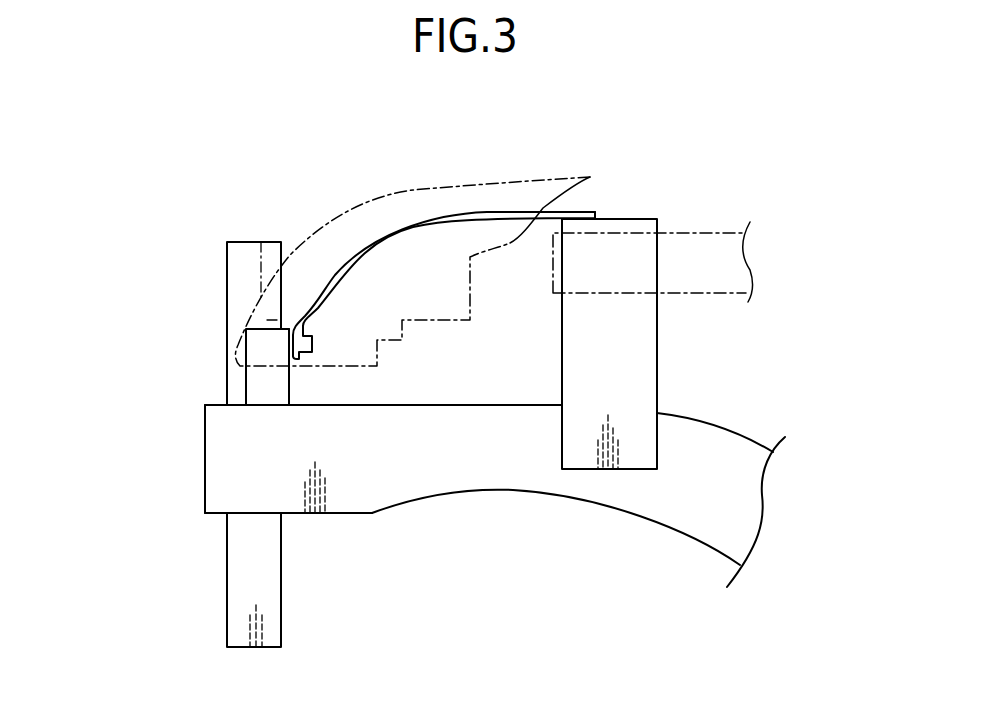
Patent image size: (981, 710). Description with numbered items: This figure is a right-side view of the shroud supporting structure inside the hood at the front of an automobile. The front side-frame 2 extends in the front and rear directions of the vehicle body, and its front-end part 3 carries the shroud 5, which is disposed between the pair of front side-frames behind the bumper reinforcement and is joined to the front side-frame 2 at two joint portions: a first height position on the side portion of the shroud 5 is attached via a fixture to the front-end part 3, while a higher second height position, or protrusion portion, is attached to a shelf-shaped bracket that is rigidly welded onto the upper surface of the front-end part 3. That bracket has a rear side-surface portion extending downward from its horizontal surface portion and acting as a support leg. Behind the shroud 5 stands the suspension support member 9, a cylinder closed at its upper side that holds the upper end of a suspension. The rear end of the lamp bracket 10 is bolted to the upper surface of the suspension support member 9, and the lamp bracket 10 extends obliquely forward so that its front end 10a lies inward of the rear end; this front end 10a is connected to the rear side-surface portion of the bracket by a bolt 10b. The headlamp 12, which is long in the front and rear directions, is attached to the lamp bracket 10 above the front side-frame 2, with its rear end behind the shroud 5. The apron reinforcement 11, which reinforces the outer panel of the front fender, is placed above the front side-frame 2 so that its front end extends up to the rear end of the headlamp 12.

The front side-frame 2 is at (493, 470).
The front-end part 3 is at (218, 494).
The shroud 5 is at (240, 597).
The suspension support member 9 is at (627, 359).
The lamp bracket 10 is at (488, 211).
The front end of lamp bracket 10a is at (290, 353).
The bolt 10b is at (315, 350).
The apron reinforcement 11 is at (693, 245).
The headlamp 12 is at (358, 208).